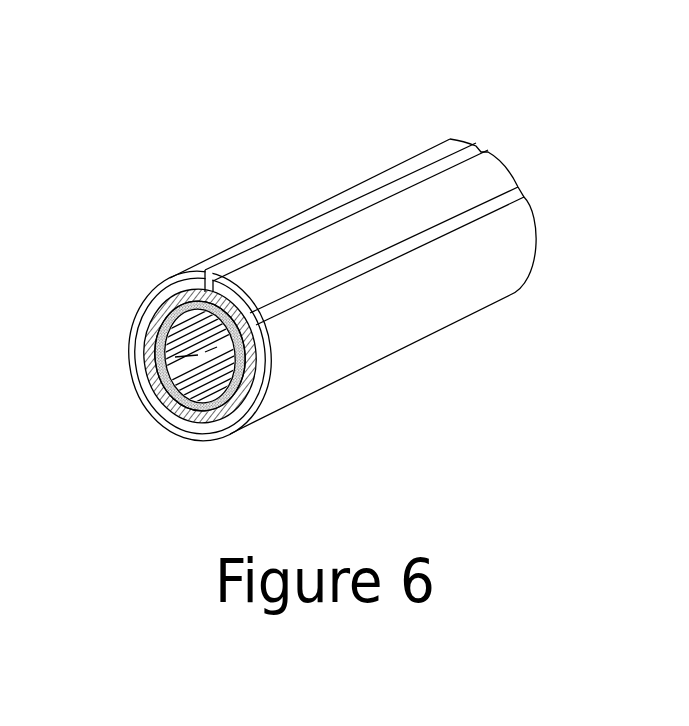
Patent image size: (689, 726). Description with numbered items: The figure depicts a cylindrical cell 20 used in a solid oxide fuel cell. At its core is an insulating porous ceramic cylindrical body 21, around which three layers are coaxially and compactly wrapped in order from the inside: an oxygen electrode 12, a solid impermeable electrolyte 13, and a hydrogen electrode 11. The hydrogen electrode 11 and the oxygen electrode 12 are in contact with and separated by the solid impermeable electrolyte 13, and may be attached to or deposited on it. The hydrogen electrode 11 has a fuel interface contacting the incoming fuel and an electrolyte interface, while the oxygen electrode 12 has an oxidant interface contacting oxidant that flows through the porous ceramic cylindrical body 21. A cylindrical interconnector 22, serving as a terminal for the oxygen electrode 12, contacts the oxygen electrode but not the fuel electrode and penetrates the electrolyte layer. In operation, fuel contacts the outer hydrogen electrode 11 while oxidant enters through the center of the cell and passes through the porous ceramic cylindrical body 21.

The cylindrical cell 20 is at (243, 135).
The hydrogen electrode 11 is at (253, 413).
The solid impermeable electrolyte 13 is at (217, 427).
The oxygen electrode 12 is at (170, 403).
The porous ceramic cylindrical body 21 is at (152, 353).
The cylindrical interconnector 22 is at (280, 275).